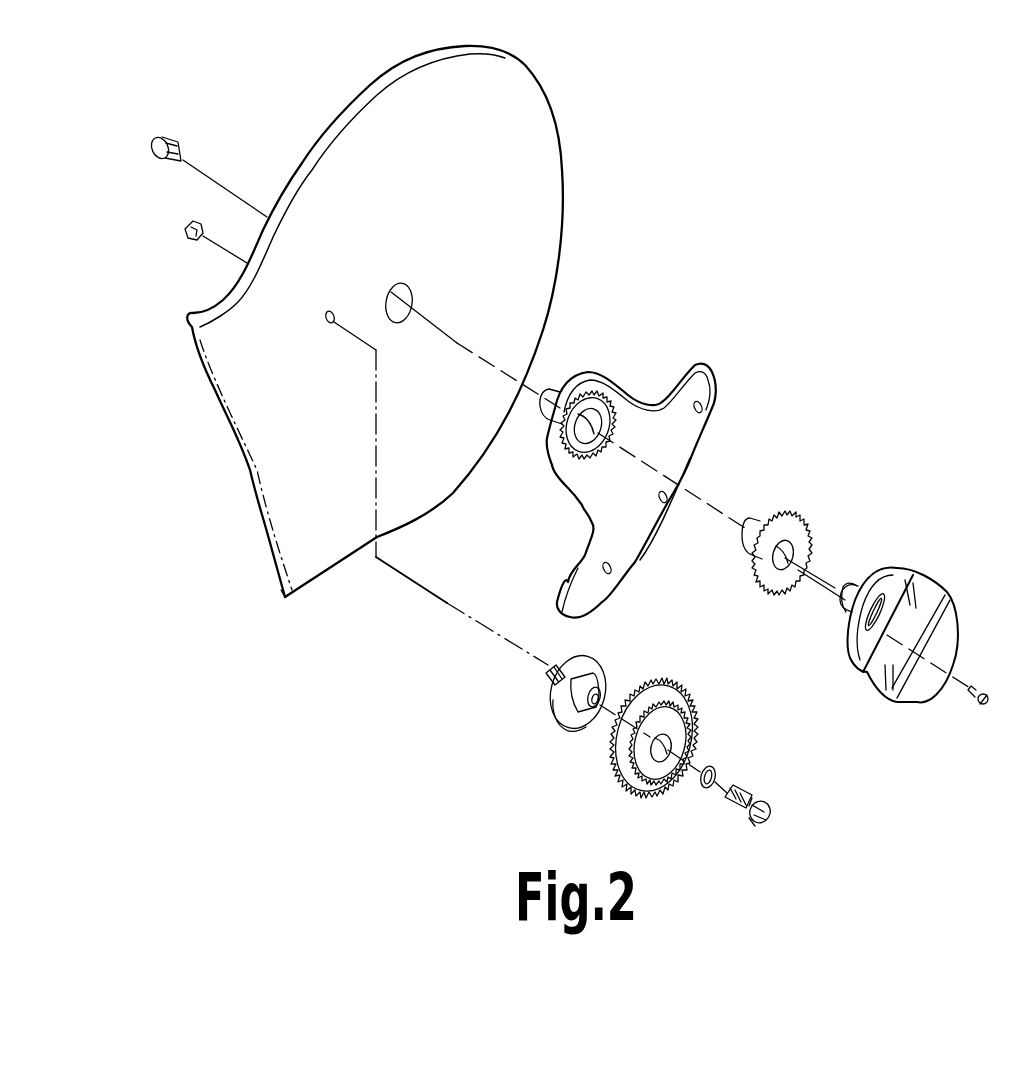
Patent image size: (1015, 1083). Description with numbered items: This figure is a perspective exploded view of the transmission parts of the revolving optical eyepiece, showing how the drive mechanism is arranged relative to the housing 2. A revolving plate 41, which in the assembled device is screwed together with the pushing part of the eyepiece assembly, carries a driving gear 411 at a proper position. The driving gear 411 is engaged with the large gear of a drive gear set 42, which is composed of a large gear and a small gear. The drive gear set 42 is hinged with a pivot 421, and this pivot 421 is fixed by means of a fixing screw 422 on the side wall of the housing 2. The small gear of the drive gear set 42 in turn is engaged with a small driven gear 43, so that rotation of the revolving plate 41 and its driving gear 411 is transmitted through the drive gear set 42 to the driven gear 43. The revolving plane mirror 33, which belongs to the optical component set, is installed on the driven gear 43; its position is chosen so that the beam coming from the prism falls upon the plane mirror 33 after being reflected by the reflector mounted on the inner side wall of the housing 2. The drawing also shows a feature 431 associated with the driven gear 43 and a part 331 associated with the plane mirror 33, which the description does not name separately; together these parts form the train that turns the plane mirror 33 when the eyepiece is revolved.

The housing 2 is at (533, 187).
The revolving plate 41 is at (712, 380).
The driving gear 411 is at (598, 403).
The small driven gear 43 is at (798, 530).
The shaft hole of gear 431 is at (763, 557).
The revolving plane mirror 33 is at (930, 577).
The motor screw 331 is at (975, 712).
The pivot 421 is at (553, 723).
The drive gear set 42 is at (623, 787).
The fixing screw 422 is at (773, 800).